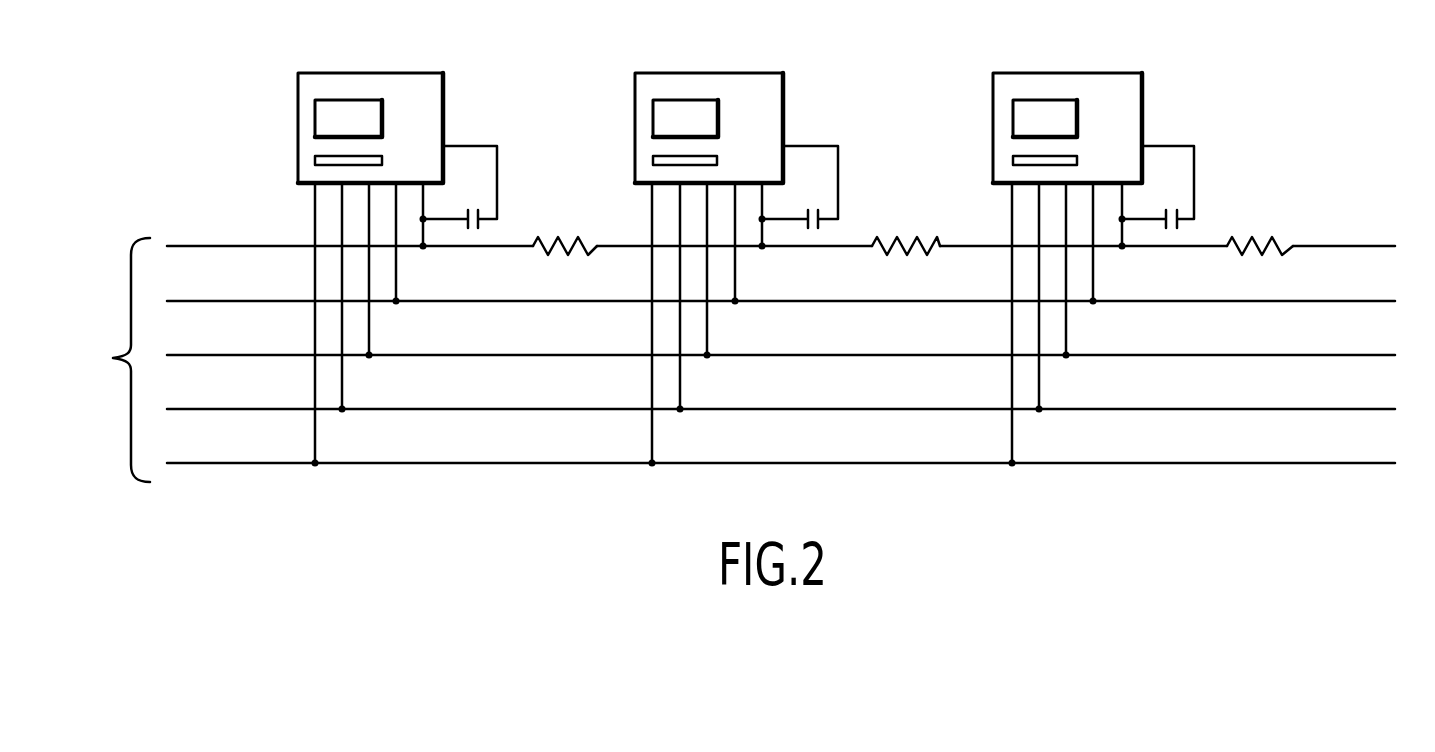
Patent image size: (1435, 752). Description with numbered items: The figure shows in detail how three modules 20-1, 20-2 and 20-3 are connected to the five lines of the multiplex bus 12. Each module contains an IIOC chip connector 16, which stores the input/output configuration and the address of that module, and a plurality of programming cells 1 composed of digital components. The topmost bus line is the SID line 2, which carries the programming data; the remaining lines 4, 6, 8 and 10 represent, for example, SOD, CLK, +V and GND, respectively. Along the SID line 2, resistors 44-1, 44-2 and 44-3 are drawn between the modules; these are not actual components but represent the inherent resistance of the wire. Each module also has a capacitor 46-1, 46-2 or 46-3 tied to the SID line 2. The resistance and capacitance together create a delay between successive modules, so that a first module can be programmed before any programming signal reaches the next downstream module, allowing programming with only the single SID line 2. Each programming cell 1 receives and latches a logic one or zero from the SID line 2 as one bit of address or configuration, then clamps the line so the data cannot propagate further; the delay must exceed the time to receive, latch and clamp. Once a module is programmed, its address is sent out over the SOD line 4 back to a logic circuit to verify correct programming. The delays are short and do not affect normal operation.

The programming cell 1 is at (315, 162).
The SID line 2 is at (1357, 246).
The SOD line 4 is at (1343, 301).
The CLK line 6 is at (1355, 355).
The +V line 8 is at (1343, 409).
The GND line 10 is at (1355, 463).
The multiplex bus 12 is at (111, 360).
The IIOC chip connector 16 is at (315, 117).
The module 20-1 is at (343, 73).
The module 20-2 is at (680, 73).
The module 20-3 is at (1038, 73).
The resistor 44-1 is at (570, 256).
The resistor 44-2 is at (914, 256).
The resistor 44-3 is at (1269, 256).
The capacitor 46-1 is at (470, 205).
The capacitor 46-2 is at (810, 205).
The capacitor 46-3 is at (1168, 205).